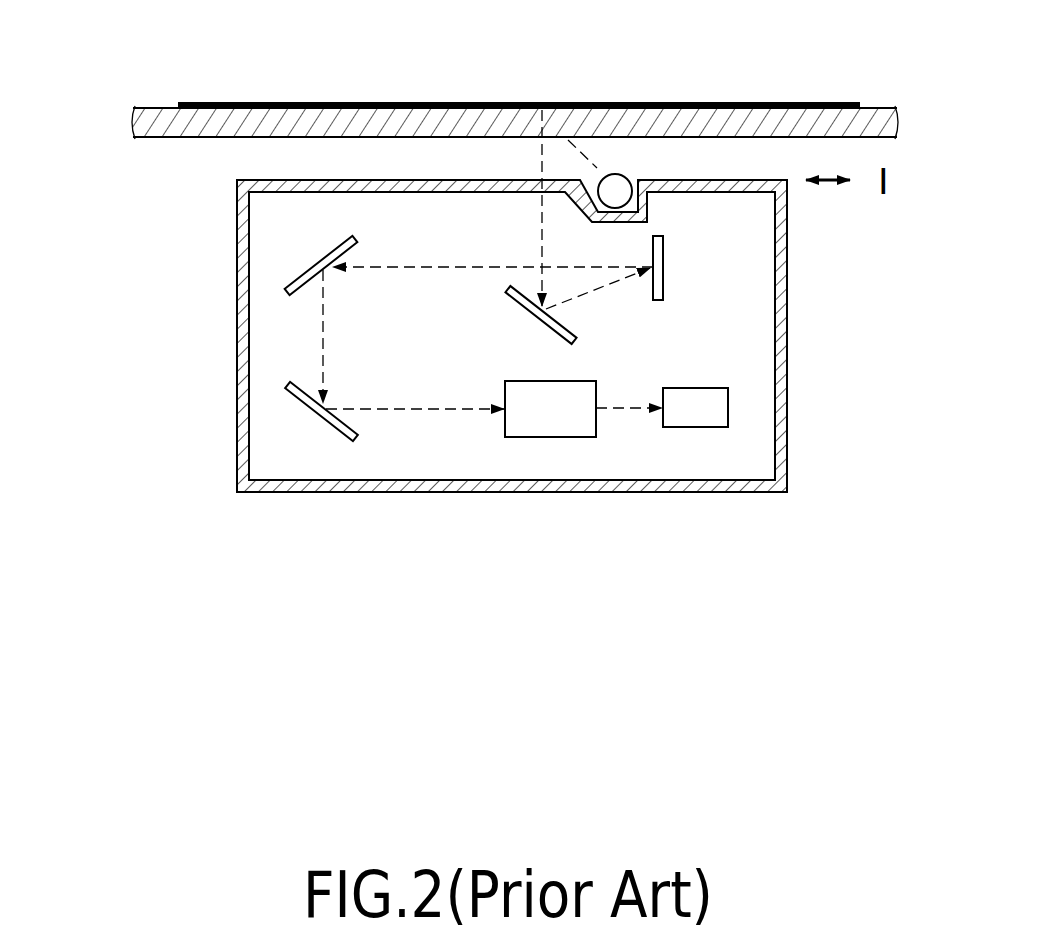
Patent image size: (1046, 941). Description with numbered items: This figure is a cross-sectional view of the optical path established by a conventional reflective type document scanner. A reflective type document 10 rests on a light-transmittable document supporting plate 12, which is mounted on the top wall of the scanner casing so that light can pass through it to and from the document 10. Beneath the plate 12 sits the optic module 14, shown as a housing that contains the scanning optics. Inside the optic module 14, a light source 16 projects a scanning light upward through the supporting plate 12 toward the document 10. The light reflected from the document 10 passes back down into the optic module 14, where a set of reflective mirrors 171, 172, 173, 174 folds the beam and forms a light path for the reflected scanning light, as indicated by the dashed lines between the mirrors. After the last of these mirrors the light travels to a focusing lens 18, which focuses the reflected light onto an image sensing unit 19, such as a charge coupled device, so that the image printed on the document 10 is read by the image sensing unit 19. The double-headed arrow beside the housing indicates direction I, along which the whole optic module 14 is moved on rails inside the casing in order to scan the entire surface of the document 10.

The reflective type document 10 is at (432, 122).
The light-transmittable document supporting plate 12 is at (288, 106).
The optic module 14 is at (237, 385).
The light source 16 is at (613, 176).
The reflective mirror 171 is at (663, 272).
The reflective mirror 172 is at (576, 338).
The reflective mirror 173 is at (322, 266).
The reflective mirror 174 is at (340, 434).
The focusing lens 18 is at (555, 428).
The image sensing unit 19 is at (697, 420).